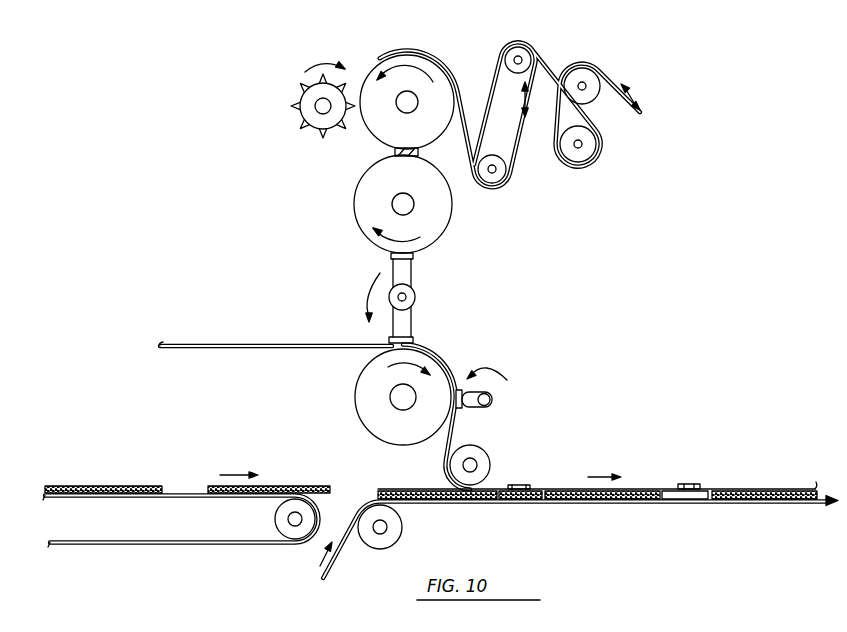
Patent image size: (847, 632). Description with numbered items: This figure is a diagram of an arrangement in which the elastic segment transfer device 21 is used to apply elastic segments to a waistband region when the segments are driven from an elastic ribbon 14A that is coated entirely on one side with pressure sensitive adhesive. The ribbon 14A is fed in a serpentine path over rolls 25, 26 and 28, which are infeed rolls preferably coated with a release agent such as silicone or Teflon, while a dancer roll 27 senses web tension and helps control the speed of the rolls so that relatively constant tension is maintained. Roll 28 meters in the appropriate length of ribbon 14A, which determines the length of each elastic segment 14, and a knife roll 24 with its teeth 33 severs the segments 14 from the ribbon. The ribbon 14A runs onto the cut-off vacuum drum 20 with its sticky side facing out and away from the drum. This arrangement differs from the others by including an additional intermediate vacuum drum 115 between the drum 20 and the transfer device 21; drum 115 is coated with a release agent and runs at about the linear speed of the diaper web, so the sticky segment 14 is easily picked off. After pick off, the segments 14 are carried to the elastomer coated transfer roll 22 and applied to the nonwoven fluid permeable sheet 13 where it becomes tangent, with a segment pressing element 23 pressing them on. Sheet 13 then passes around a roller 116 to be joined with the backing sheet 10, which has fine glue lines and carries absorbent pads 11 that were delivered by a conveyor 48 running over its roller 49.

The backing sheet 10 is at (338, 556).
The articles (trays) 11 is at (212, 486).
The nonwoven fluid permeable sheet 13 is at (291, 343).
The elastic segment 14 is at (363, 137).
The elastic ribbon 14A is at (453, 78).
The vacuum drum 20 is at (403, 56).
The elastic segment transfer device 21 is at (430, 297).
The transfer roll 22 is at (363, 386).
The segment pressing element 23 is at (494, 398).
The knife roll 24 is at (318, 103).
The roll 25 is at (584, 67).
The roll 26 is at (585, 160).
The dancer roll 27 is at (522, 47).
The roll 28 is at (497, 182).
The teeth 33 is at (290, 106).
The conveyor 48 is at (192, 546).
The conveyor roller 49 is at (274, 518).
The intermediate vacuum drum 115 is at (355, 192).
The roller 116 is at (485, 447).